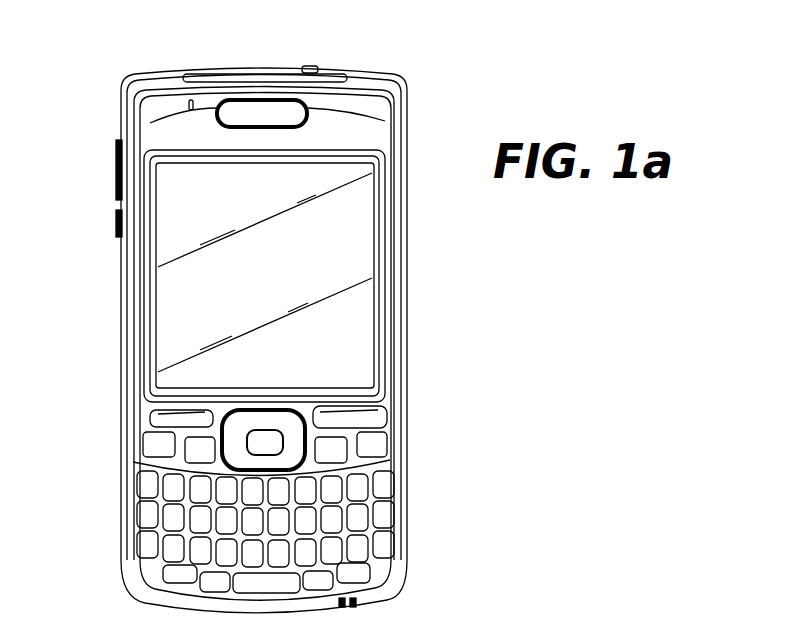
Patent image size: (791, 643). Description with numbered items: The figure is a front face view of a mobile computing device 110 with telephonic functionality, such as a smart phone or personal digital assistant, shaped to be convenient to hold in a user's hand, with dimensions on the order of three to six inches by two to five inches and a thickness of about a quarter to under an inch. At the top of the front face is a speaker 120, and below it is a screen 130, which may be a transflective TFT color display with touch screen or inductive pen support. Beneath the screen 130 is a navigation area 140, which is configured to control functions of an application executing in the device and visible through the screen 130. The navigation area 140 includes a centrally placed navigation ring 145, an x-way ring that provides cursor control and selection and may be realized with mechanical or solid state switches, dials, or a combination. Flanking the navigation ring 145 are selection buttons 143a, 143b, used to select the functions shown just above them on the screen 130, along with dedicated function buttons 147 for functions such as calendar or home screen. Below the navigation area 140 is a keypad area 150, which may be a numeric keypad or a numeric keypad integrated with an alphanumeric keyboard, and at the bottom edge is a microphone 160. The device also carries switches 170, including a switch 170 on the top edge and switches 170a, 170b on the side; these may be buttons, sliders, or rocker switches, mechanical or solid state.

The mobile computing device 110 is at (404, 85).
The speaker 120 is at (258, 108).
The screen 130 is at (355, 250).
The navigation area 140 is at (284, 415).
The selection button 143a is at (153, 416).
The selection button 143b is at (360, 418).
The navigation ring 145 is at (290, 430).
The dedicated function buttons 147 is at (197, 456).
The keypad area 150 is at (415, 472).
The microphone 160 is at (353, 612).
The switch 170 is at (312, 67).
The switch 170a is at (116, 160).
The switch 170b is at (116, 226).